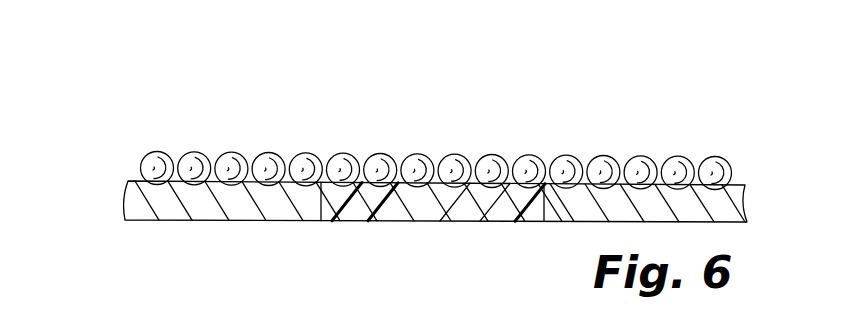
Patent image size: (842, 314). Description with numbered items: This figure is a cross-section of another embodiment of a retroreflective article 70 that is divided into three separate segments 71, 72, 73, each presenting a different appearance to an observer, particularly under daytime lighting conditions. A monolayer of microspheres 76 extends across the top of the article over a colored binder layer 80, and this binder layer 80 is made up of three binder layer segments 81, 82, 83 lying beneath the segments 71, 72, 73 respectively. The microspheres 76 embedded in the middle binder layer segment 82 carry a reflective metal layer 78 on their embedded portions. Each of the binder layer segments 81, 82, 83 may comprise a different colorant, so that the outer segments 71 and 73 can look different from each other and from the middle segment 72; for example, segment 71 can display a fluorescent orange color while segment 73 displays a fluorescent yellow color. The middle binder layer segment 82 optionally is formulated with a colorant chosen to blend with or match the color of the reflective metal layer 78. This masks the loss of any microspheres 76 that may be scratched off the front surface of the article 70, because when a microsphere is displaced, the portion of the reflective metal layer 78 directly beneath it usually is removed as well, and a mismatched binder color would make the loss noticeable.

The retroreflective article 70 is at (577, 52).
The segment 71 is at (321, 110).
The segment 72 is at (540, 98).
The segment 73 is at (547, 110).
The microspheres 76 is at (222, 152).
The reflective metal layer 78 is at (397, 188).
The colored binder layer 80 is at (231, 219).
The binder layer segment 81 is at (145, 200).
The binder layer segment 82 is at (503, 208).
The binder layer segment 83 is at (727, 207).